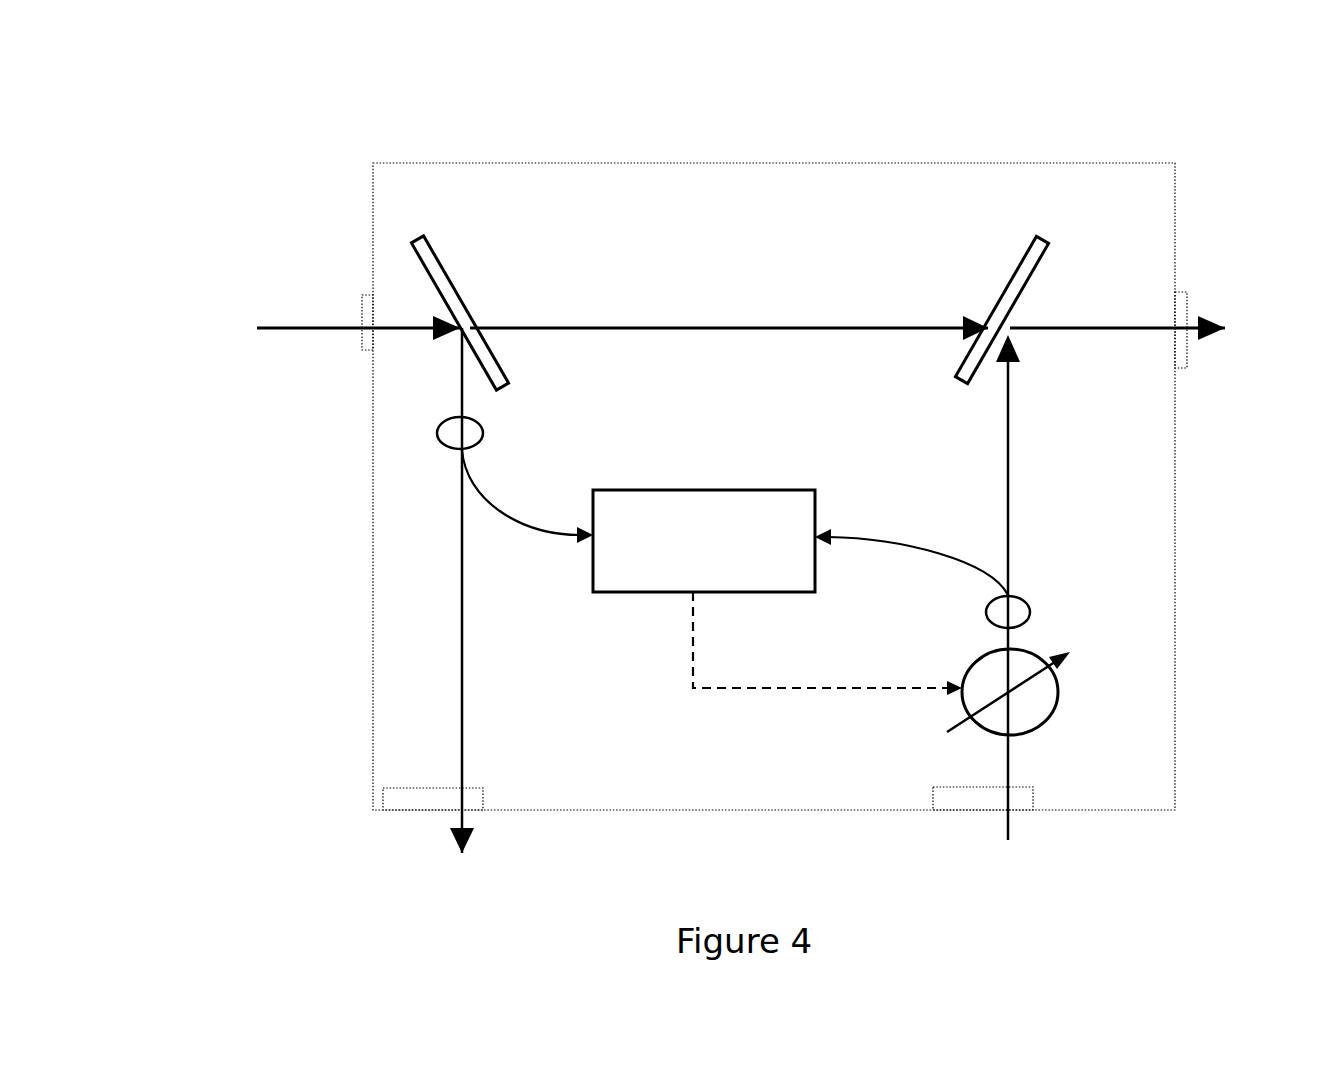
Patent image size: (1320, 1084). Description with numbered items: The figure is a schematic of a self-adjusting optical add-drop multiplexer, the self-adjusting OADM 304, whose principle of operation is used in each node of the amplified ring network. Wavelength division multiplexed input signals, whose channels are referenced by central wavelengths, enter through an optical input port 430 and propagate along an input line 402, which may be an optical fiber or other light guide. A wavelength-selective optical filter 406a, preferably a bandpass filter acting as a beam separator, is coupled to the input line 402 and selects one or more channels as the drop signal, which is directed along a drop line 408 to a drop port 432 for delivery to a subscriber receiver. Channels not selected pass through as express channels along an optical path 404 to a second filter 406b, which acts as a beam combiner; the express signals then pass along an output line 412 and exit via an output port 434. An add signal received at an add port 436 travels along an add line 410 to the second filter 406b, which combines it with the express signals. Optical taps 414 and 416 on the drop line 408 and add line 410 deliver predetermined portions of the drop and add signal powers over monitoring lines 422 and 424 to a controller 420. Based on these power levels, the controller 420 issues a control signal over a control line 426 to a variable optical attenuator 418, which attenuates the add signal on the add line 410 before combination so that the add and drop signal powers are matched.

The self-adjusting OADM 304 is at (510, 158).
The input line 402 is at (328, 328).
The optical path 404 is at (645, 328).
The optical filter 406a is at (428, 240).
The second filter 406b is at (1043, 238).
The drop line 408 is at (460, 575).
The add line 410 is at (1008, 487).
The output line 412 is at (1130, 328).
The optical tap 414 is at (487, 437).
The optical tap 416 is at (1030, 603).
The variable optical attenuator 418 is at (1058, 693).
The controller 420 is at (780, 490).
The monitoring line 422 is at (515, 512).
The monitoring line 424 is at (890, 543).
The control line 426 is at (718, 692).
The optical input port 430 is at (367, 295).
The drop port 432 is at (395, 800).
The output port 434 is at (1188, 300).
The add port 436 is at (1020, 797).